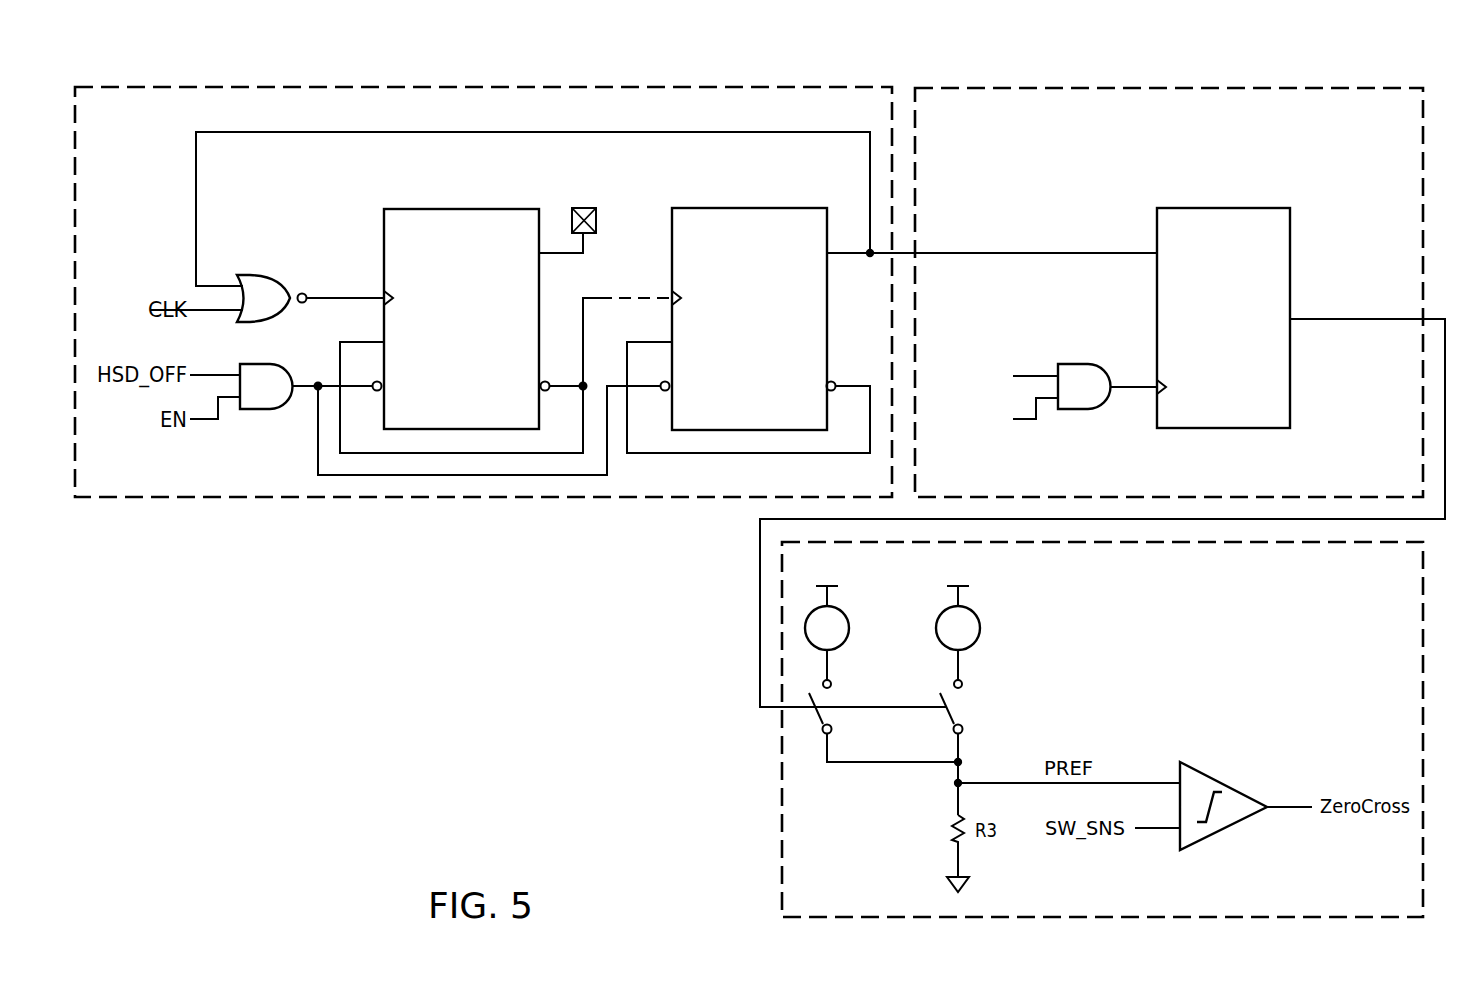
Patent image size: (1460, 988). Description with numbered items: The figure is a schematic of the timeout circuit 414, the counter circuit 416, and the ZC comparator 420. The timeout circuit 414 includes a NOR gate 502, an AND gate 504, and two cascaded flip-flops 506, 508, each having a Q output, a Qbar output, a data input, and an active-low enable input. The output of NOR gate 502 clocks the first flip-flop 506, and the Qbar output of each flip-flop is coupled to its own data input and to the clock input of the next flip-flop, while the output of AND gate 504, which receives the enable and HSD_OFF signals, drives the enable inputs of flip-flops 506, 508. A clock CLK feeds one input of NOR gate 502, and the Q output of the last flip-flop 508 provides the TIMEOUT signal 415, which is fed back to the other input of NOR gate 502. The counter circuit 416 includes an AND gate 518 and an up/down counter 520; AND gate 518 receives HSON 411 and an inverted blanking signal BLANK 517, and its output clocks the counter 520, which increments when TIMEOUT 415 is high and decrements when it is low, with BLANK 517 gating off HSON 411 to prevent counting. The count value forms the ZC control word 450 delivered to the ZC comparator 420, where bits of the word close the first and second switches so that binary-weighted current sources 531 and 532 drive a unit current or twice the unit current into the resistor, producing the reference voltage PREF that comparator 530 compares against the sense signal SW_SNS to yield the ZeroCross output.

The timeout circuit 414 is at (415, 82).
The counter circuit 416 is at (1212, 82).
The ZC comparator 420 is at (1212, 684).
The NOR gate 502 is at (264, 276).
The AND gate 504 is at (262, 412).
The flip-flop 506 is at (440, 202).
The flip-flop 508 is at (722, 200).
The TIMEOUT signal 415 is at (1040, 256).
The HSON signal 411 is at (1036, 373).
The blanking signal (BLANK) 517 is at (1024, 420).
The AND gate 518 is at (1080, 410).
The up/down counter 520 is at (1250, 198).
The ZC control signal 450 is at (1355, 321).
The current source 531 is at (849, 628).
The current source 532 is at (980, 628).
The comparator 530 is at (1228, 826).